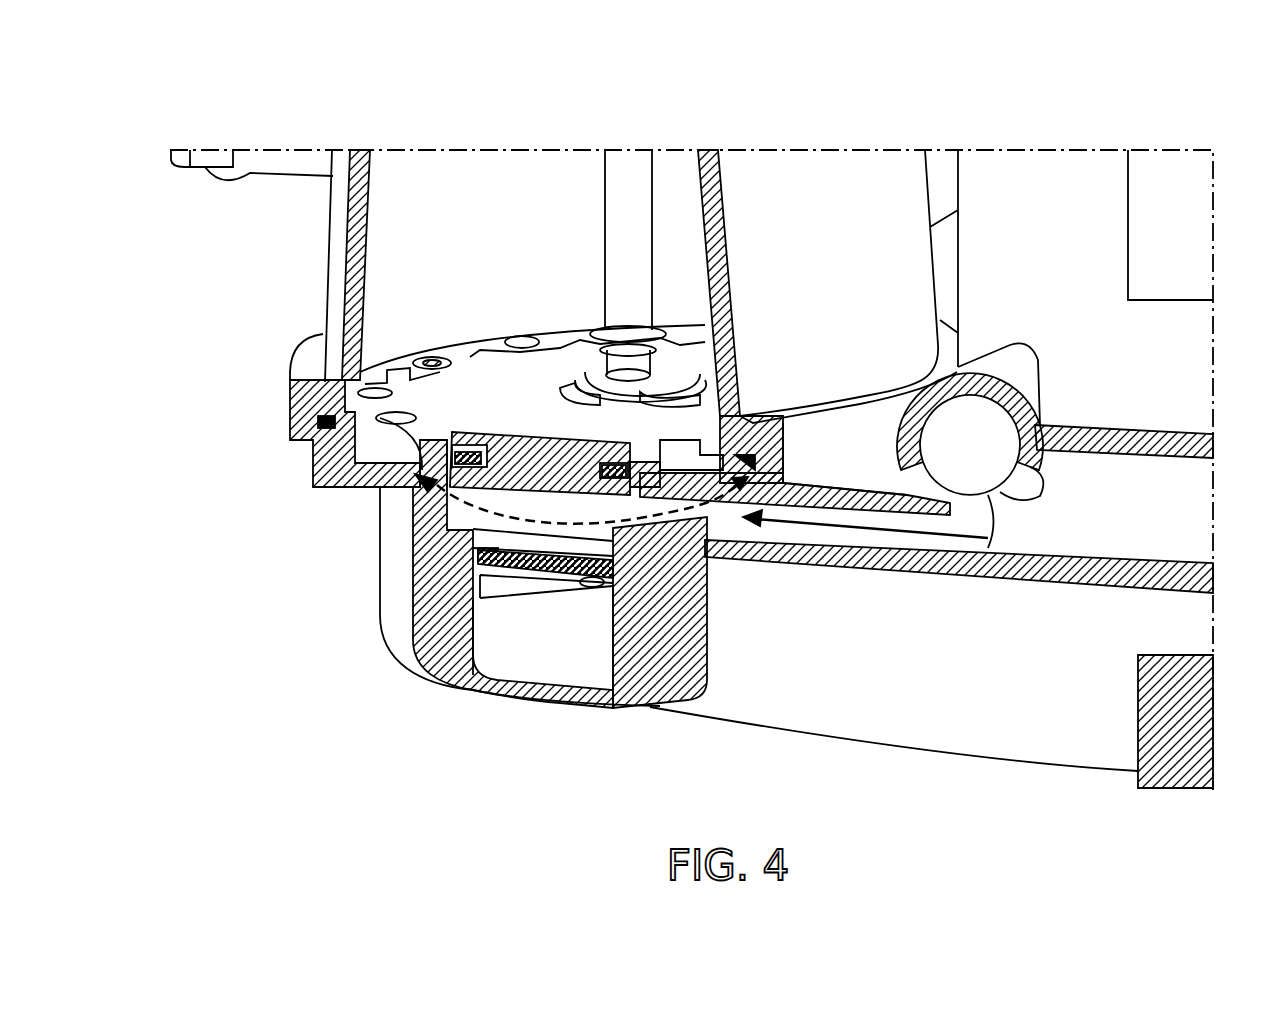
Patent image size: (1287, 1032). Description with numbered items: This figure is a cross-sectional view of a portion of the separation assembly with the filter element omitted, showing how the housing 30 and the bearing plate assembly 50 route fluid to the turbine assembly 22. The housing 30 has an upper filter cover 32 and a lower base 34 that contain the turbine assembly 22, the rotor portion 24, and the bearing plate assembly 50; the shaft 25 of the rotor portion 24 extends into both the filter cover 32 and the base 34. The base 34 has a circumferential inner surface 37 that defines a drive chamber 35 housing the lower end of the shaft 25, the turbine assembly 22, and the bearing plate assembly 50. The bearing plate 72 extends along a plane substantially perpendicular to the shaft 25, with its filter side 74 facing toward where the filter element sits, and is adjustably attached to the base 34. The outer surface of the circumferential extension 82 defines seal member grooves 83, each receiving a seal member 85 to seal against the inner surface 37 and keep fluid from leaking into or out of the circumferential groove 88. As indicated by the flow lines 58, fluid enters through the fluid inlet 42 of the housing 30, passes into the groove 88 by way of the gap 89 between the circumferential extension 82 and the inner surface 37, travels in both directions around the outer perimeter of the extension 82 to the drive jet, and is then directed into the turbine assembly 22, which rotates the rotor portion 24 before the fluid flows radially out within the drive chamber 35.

The turbine assembly 22 is at (587, 594).
The rotor portion 24 is at (603, 212).
The shaft 25 is at (600, 178).
The housing 30 is at (980, 755).
The filter cover 32 is at (330, 246).
The base 34 is at (378, 593).
The drive chamber 35 is at (493, 636).
The inner surface 37 is at (430, 510).
The fluid inlet 42 is at (1190, 566).
The bearing plate assembly 50 is at (436, 352).
The flow lines 58 is at (412, 489).
The bearing plate 72 is at (483, 372).
The filter side 74 is at (507, 365).
The circumferential extension 82 is at (417, 655).
The seal member grooves 83 is at (480, 455).
The seal member 85 is at (462, 452).
The circumferential groove 88 is at (480, 531).
The gap 89 is at (548, 582).